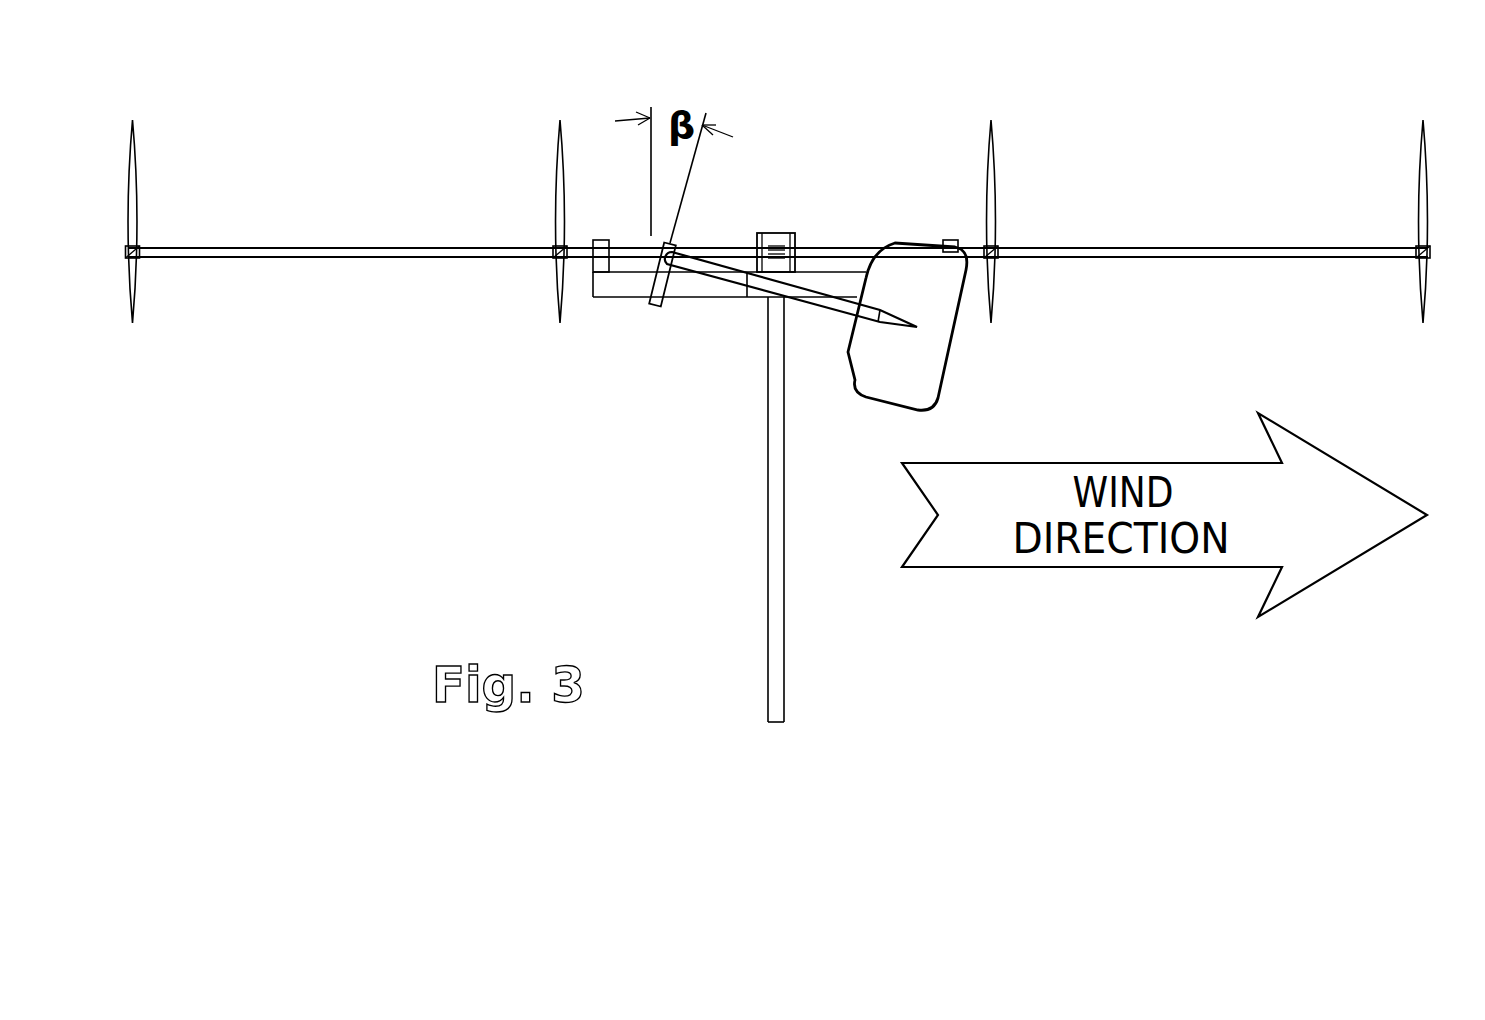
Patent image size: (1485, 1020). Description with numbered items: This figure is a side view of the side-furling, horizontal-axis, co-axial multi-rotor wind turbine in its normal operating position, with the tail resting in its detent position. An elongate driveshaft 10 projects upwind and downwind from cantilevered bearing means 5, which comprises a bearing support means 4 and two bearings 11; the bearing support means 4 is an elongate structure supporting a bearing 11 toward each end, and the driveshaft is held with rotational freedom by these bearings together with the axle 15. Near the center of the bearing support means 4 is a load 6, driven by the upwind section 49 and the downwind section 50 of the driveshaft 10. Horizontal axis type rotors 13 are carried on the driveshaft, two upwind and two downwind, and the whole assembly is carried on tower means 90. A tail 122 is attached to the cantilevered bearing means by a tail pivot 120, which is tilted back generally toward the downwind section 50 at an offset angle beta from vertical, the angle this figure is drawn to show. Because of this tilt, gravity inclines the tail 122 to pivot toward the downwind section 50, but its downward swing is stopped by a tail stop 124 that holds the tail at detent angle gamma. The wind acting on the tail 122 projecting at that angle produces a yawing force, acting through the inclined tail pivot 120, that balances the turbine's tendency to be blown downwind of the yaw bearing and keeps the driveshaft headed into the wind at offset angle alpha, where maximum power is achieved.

The bearing support means 4 is at (617, 297).
The cantilevered bearing means 5 is at (857, 213).
The load 6 is at (770, 233).
The elongate driveshaft 10 is at (1150, 287).
The bearing 11 is at (602, 240).
The horizontal axis type rotor 13 is at (137, 195).
The axle 15 is at (717, 247).
The upwind section of the driveshaft 49 is at (267, 260).
The downwind section of the driveshaft 50 is at (1253, 261).
The tower means 90 is at (787, 532).
The tail pivot 120 is at (656, 306).
The tail 122 is at (885, 403).
The tail stop 124 is at (753, 300).